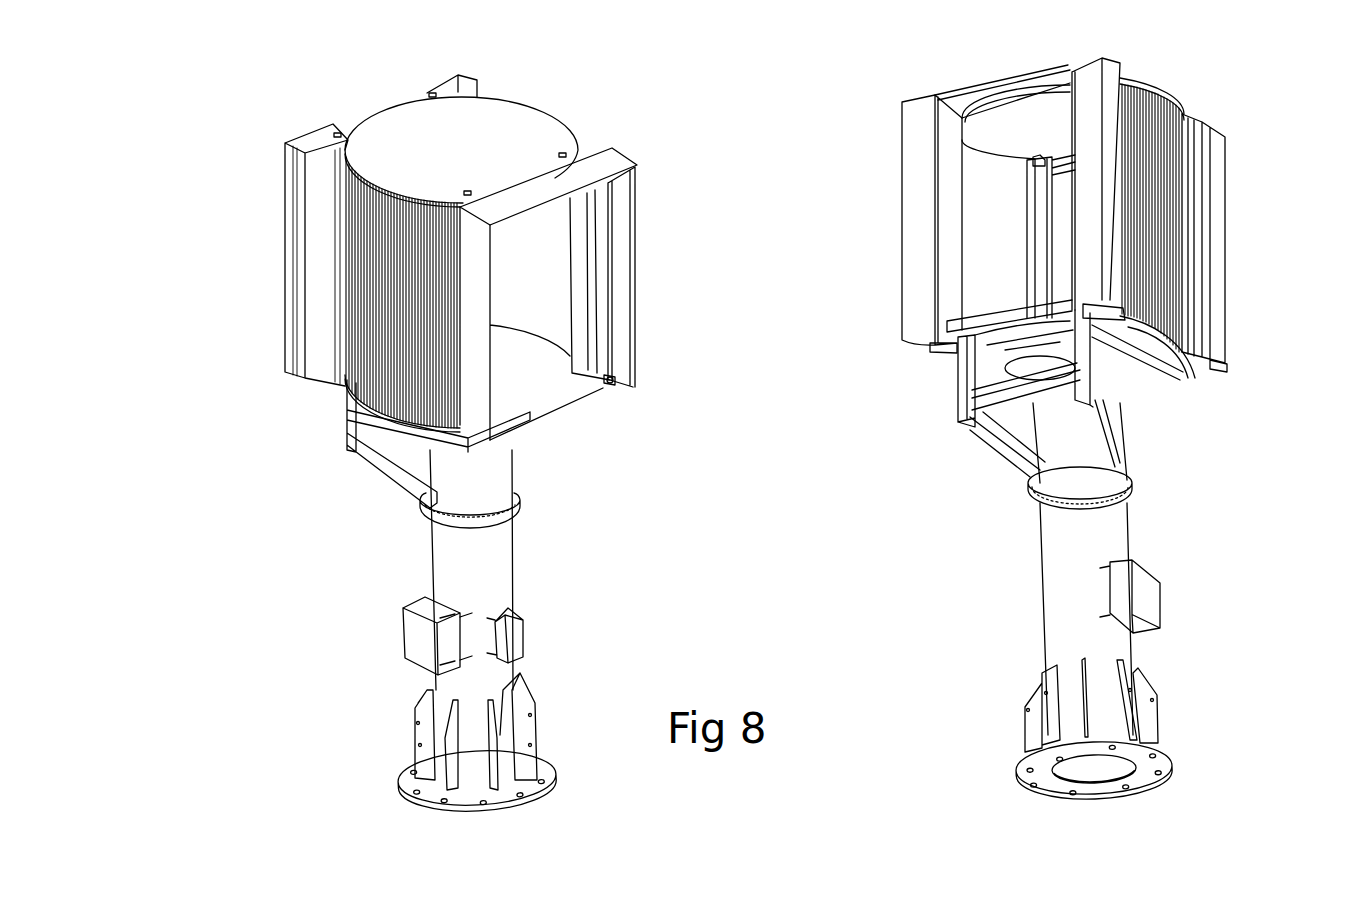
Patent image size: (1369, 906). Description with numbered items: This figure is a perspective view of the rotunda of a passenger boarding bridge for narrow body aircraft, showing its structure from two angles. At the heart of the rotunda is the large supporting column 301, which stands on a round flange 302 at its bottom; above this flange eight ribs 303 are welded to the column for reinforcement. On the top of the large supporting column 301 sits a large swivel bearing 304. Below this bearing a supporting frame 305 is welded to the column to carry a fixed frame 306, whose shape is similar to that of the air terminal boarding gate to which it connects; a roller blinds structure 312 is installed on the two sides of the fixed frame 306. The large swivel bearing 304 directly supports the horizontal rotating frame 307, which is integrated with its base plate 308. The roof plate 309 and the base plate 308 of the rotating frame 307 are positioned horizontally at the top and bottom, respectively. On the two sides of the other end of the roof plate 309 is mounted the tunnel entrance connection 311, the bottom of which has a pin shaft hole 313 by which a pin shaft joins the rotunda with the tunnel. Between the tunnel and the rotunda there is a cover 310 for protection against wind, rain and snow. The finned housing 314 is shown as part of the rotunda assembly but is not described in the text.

The large supporting column 301 is at (1072, 560).
The round flange 302 is at (1147, 777).
The ribs 303 is at (1030, 725).
The large swivel bearing 304 is at (1087, 390).
The supporting frame 305 is at (973, 430).
The fixed frame 306 is at (955, 270).
The horizontal rotating frame 307 is at (1219, 368).
The base plate 308 is at (977, 390).
The roof plate 309 is at (483, 132).
The cover 310 is at (595, 164).
The tunnel entrance connection 311 is at (608, 292).
The roller blinds structure 312 is at (325, 305).
The pin shaft hole 313 is at (614, 382).
The finned housing 314 is at (395, 345).